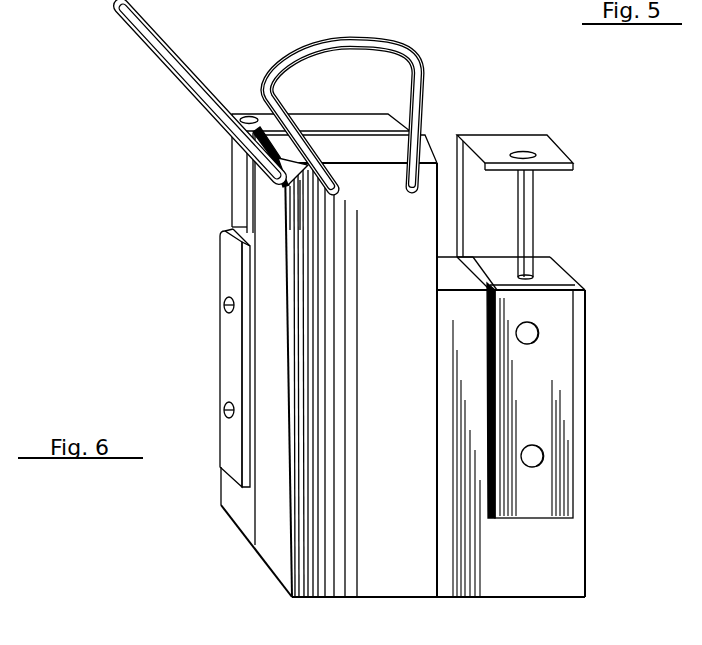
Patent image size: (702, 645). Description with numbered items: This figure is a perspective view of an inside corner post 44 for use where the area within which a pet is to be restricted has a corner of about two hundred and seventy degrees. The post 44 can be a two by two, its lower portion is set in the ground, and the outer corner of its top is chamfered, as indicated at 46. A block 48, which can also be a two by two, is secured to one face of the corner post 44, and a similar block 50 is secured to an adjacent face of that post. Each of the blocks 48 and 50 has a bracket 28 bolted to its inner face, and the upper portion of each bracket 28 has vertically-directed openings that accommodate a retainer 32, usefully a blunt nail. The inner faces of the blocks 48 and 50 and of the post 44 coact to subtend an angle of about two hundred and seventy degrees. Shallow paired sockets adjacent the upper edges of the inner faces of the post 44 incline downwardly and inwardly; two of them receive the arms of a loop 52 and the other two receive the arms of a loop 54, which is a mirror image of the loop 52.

The bracket 28 is at (224, 268).
The retainer 32 is at (249, 182).
The corner post 44 is at (275, 563).
The chamfer 46 is at (296, 184).
The block 48 is at (237, 505).
The block 50 is at (570, 565).
The loop 52 is at (184, 68).
The loop 54 is at (421, 117).